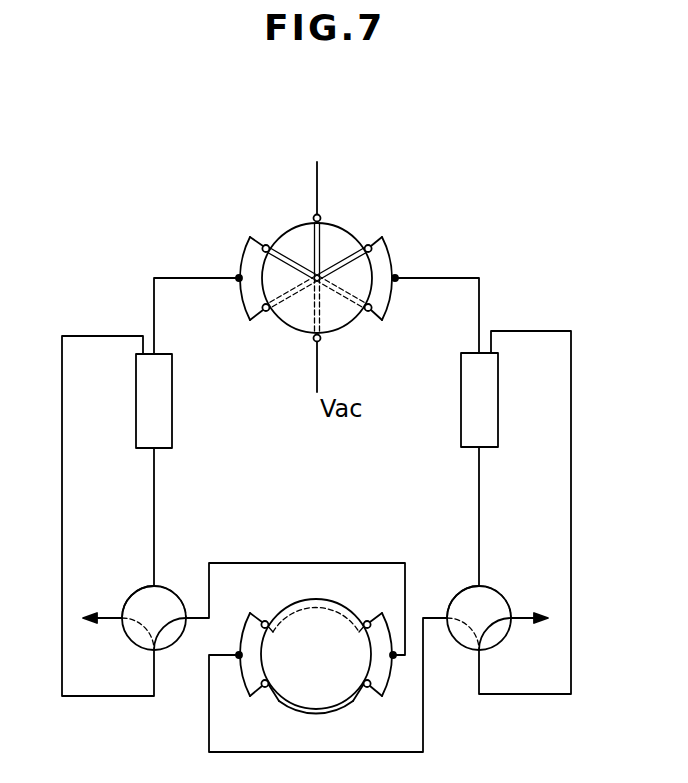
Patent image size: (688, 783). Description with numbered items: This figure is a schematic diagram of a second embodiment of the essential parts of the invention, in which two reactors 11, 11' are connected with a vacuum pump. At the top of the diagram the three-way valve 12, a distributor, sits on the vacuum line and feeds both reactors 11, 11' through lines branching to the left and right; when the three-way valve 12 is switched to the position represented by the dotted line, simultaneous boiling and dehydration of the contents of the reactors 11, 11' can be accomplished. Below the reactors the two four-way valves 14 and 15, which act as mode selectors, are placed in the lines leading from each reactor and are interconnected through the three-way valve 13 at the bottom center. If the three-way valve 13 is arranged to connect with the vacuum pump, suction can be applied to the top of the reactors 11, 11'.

The three-way valve 12 is at (290, 230).
The reactor 11 is at (188, 401).
The reactor 11' is at (446, 400).
The three-way valve 13 is at (338, 709).
The four-way valve 14 is at (172, 588).
The four-way valve 15 is at (463, 590).